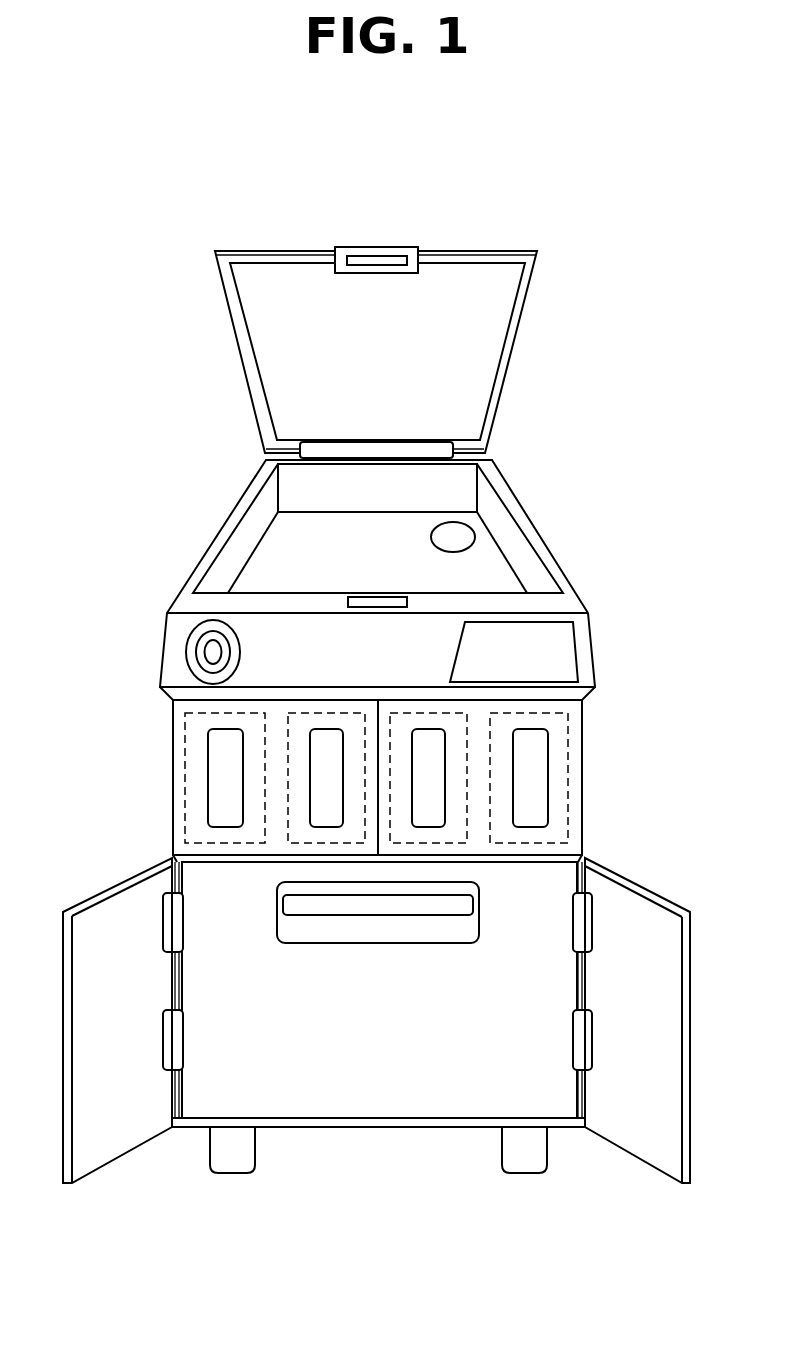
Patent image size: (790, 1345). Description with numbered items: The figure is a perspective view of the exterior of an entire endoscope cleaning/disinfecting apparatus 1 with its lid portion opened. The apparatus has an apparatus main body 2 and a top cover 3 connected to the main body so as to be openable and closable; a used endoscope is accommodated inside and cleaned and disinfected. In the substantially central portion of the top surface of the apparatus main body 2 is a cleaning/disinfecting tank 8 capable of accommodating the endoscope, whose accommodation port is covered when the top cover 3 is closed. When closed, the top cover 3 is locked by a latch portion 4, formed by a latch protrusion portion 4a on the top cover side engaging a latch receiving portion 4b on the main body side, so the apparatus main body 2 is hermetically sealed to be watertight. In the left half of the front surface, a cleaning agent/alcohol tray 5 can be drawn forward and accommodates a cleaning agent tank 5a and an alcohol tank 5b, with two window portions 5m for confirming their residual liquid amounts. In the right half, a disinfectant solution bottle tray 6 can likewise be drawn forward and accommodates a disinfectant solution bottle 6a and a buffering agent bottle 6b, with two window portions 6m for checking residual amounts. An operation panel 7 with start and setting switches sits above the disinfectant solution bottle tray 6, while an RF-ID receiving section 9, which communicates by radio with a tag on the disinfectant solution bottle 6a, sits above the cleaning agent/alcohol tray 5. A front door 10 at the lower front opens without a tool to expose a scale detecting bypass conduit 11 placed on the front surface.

The endoscope cleaning/disinfecting apparatus 1 is at (557, 438).
The apparatus main body 2 is at (371, 580).
The top cover 3 is at (361, 352).
The latch portion 4 is at (383, 611).
The latch protrusion portion 4a is at (378, 270).
The latch receiving portion 4b is at (392, 598).
The cleaning agent/alcohol tray 5 is at (251, 800).
The cleaning agent tank 5a is at (227, 845).
The alcohol tank 5b is at (282, 843).
The window portions 5m is at (230, 728).
The disinfectant solution bottle tray 6 is at (503, 800).
The disinfectant solution bottle 6a is at (470, 843).
The buffering agent bottle 6b is at (530, 845).
The window portions 6m is at (530, 728).
The operation panel 7 is at (567, 642).
The cleaning/disinfecting tank 8 is at (490, 568).
The RF-ID receiving section 9 is at (210, 652).
The front door 10 is at (120, 1148).
The scale detecting bypass conduit 11 is at (380, 922).